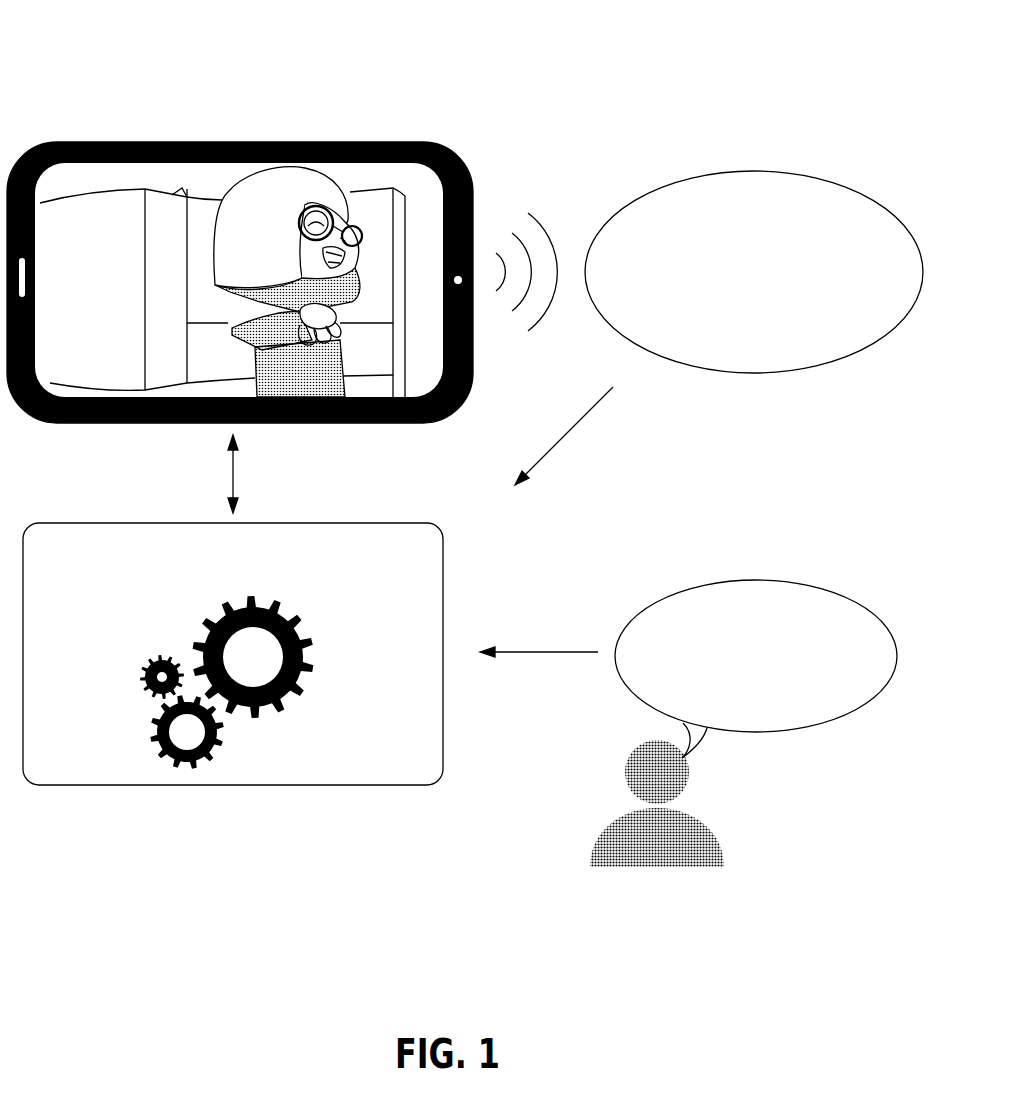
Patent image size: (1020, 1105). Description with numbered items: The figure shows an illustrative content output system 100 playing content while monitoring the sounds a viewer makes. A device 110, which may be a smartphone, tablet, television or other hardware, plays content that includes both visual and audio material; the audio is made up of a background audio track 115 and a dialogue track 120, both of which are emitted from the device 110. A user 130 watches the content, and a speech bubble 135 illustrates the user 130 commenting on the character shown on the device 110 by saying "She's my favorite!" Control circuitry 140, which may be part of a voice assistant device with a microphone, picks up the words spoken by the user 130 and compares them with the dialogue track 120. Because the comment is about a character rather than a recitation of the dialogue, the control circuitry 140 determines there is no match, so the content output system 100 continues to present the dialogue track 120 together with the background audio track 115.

The content output system 100 is at (80, 28).
The device 110 is at (214, 140).
The background audio track 115 is at (850, 228).
The dialogue track 120 is at (823, 337).
The user 130 is at (708, 828).
The speech bubble 135 is at (748, 580).
The control circuitry 140 is at (255, 786).